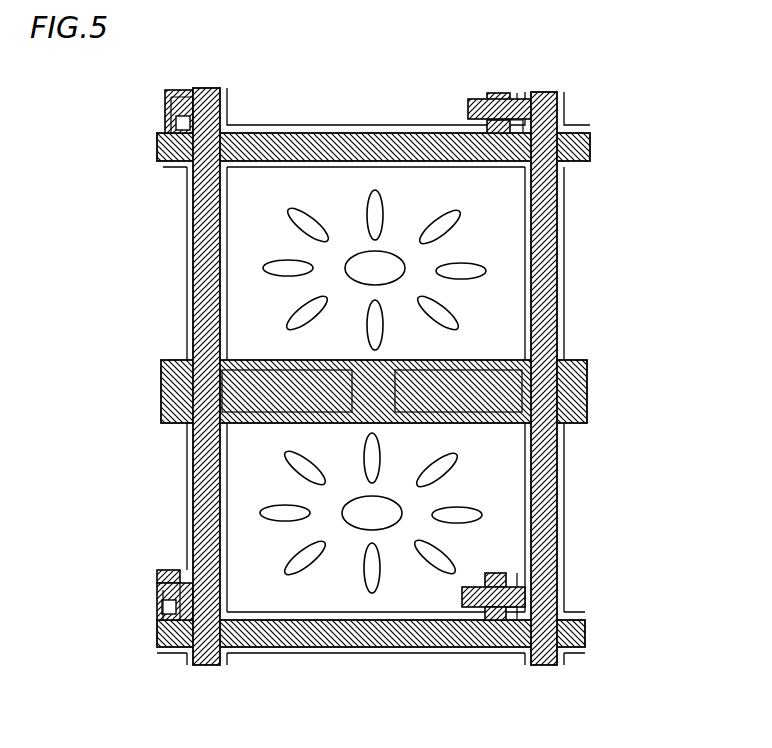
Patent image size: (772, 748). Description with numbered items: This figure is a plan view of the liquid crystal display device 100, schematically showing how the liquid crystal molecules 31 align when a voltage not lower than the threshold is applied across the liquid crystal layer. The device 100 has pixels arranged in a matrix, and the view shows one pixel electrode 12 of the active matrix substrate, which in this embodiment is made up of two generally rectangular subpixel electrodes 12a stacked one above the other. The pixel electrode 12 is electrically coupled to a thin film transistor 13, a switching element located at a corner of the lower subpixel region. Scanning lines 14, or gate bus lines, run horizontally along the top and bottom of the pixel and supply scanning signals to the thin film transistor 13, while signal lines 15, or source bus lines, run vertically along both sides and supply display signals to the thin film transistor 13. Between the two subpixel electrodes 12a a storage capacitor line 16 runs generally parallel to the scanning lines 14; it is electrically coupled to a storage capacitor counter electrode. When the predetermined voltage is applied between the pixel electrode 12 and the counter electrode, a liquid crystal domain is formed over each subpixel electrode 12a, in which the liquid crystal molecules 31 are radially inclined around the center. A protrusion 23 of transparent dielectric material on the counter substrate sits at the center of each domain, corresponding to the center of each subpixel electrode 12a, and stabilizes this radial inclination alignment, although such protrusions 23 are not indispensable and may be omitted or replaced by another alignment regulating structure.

The liquid crystal display device 100 is at (593, 105).
The pixel electrode 12 is at (703, 312).
The subpixel electrode 12a is at (510, 340).
The thin film transistor 13 is at (471, 576).
The scanning line 14 is at (423, 647).
The signal line 15 is at (548, 263).
The storage capacitor line 16 is at (162, 392).
The protrusion 23 is at (382, 265).
The liquid crystal molecule 31 is at (453, 218).